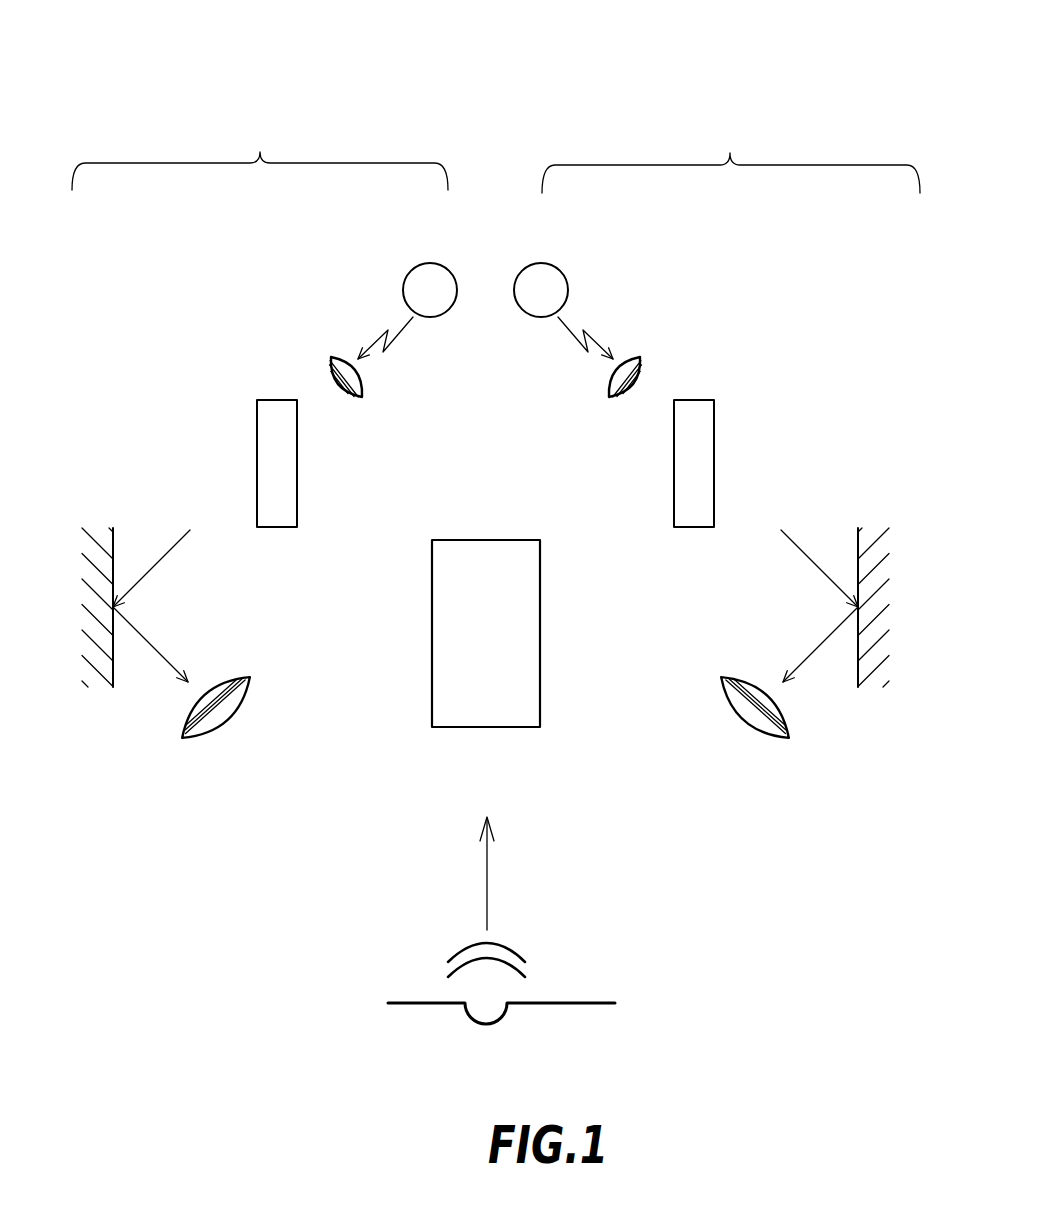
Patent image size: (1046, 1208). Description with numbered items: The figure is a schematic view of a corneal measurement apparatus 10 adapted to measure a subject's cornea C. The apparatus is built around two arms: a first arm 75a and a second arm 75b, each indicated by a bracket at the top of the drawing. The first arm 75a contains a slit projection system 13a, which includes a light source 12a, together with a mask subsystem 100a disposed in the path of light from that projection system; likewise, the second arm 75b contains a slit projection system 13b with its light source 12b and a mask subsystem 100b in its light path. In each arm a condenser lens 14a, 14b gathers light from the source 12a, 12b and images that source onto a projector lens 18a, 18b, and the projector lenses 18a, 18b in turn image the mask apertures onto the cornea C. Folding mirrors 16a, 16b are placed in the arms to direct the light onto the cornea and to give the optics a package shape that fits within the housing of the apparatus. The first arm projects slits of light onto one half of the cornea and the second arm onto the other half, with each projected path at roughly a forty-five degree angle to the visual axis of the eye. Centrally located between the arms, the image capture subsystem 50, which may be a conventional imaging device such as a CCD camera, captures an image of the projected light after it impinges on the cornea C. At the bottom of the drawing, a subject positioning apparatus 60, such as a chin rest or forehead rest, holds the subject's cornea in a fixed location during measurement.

The corneal measurement apparatus 10 is at (512, 82).
The first arm 75a is at (260, 152).
The second arm 75b is at (730, 153).
The light source 12a is at (430, 263).
The light source 12b is at (552, 265).
The slit projection system 13a is at (377, 297).
The slit projection system 13b is at (618, 307).
The condenser lens 14a is at (362, 398).
The condenser lens 14b is at (608, 398).
The mask subsystem 100a is at (257, 400).
The mask subsystem 100b is at (715, 400).
The folding mirror 16a is at (83, 528).
The folding mirror 16b is at (887, 528).
The image capture subsystem 50 is at (540, 540).
The projector lens 18a is at (198, 738).
The projector lens 18b is at (775, 740).
The cornea C is at (508, 948).
The subject positioning apparatus 60 is at (583, 1003).